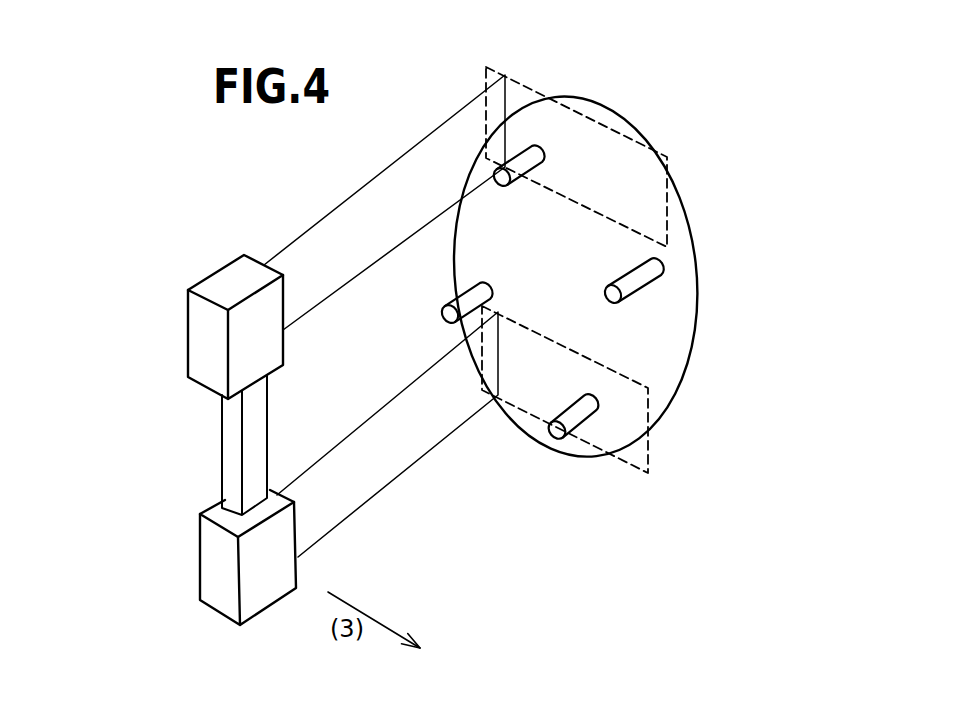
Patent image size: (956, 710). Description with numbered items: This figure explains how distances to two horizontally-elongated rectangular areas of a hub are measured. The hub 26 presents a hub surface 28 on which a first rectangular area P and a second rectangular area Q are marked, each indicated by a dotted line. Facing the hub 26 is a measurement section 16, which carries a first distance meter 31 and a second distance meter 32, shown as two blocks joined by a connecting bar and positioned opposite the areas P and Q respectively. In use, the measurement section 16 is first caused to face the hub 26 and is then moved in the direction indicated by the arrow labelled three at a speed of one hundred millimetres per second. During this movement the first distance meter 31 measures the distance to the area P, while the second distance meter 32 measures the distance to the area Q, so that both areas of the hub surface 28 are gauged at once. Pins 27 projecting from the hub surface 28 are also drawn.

The measurement section 16 is at (125, 530).
The hub 26 is at (733, 170).
The pins 27 is at (523, 158).
The hub surface 28 is at (677, 328).
The first distance meter 31 is at (217, 283).
The second distance meter 32 is at (217, 600).
The first rectangular area P is at (647, 168).
The second rectangular area Q is at (633, 460).